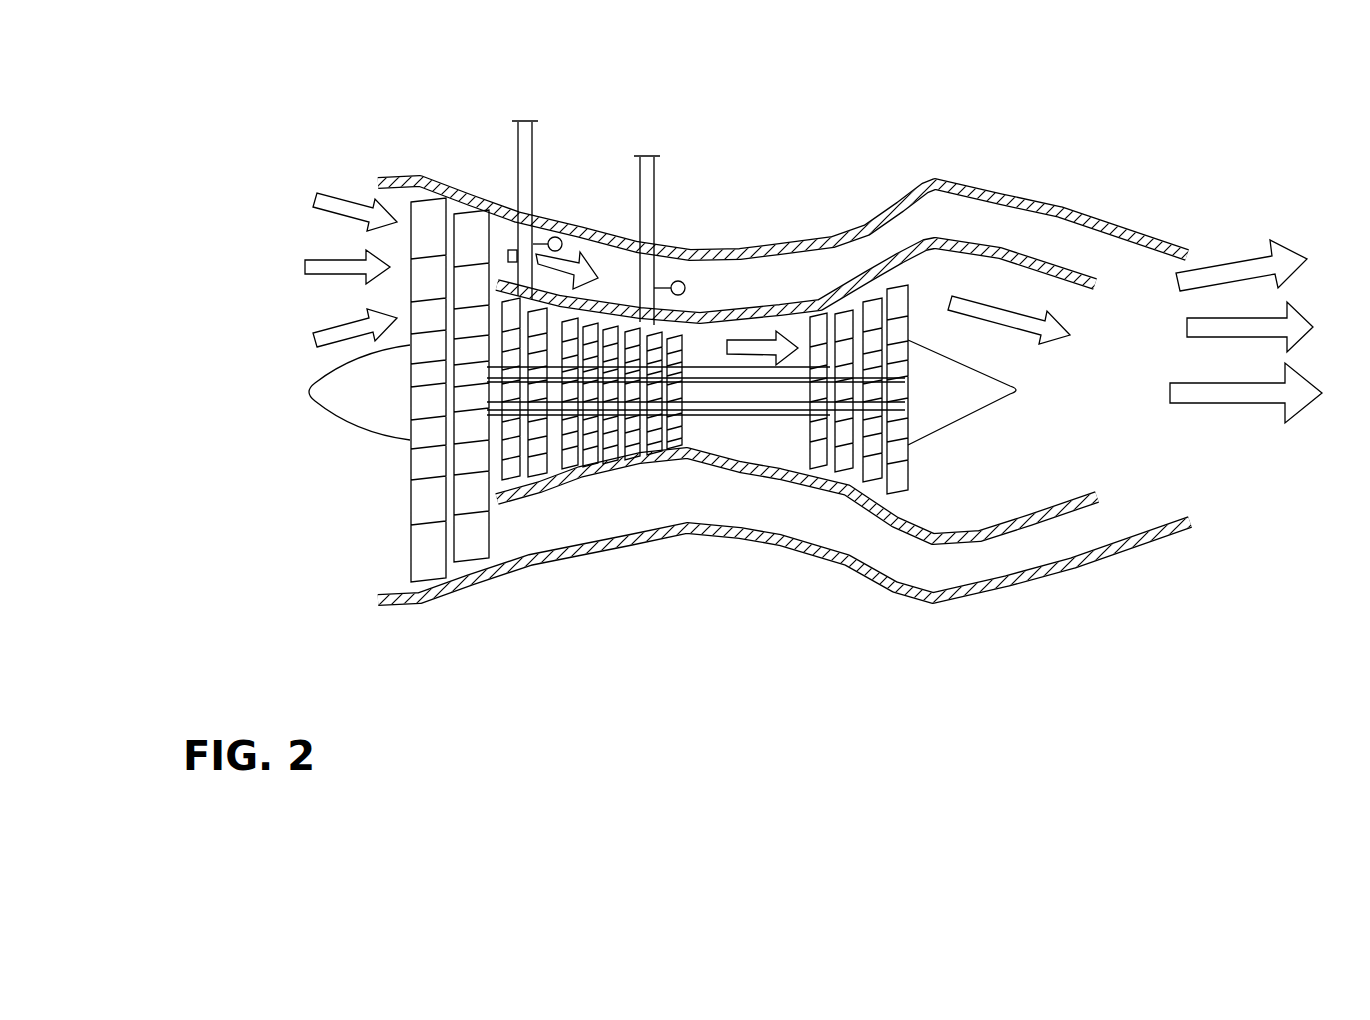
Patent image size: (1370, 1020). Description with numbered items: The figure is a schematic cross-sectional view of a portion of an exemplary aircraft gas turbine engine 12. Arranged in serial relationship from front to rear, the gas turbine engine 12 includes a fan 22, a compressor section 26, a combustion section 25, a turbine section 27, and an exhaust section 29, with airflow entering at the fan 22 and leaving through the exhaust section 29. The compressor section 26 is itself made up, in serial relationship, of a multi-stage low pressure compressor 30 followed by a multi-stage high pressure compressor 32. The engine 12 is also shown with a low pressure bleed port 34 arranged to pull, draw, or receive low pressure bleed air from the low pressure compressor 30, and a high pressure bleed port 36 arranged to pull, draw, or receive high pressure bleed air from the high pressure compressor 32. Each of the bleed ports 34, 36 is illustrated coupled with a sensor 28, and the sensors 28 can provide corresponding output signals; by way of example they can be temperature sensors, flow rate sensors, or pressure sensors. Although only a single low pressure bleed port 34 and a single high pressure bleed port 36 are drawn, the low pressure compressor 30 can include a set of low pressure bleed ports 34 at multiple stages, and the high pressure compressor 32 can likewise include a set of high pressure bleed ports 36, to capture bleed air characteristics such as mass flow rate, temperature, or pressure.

The gas turbine engine 12 is at (390, 105).
The fan 22 is at (423, 552).
The combustion section 25 is at (768, 443).
The compressor section 26 is at (583, 466).
The turbine section 27 is at (847, 463).
The sensors 28 is at (555, 236).
The exhaust section 29 is at (1067, 440).
The low pressure compressor 30 is at (524, 468).
The high pressure compressor 32 is at (627, 447).
The low pressure bleed port 34 is at (518, 164).
The high pressure bleed port 36 is at (660, 309).